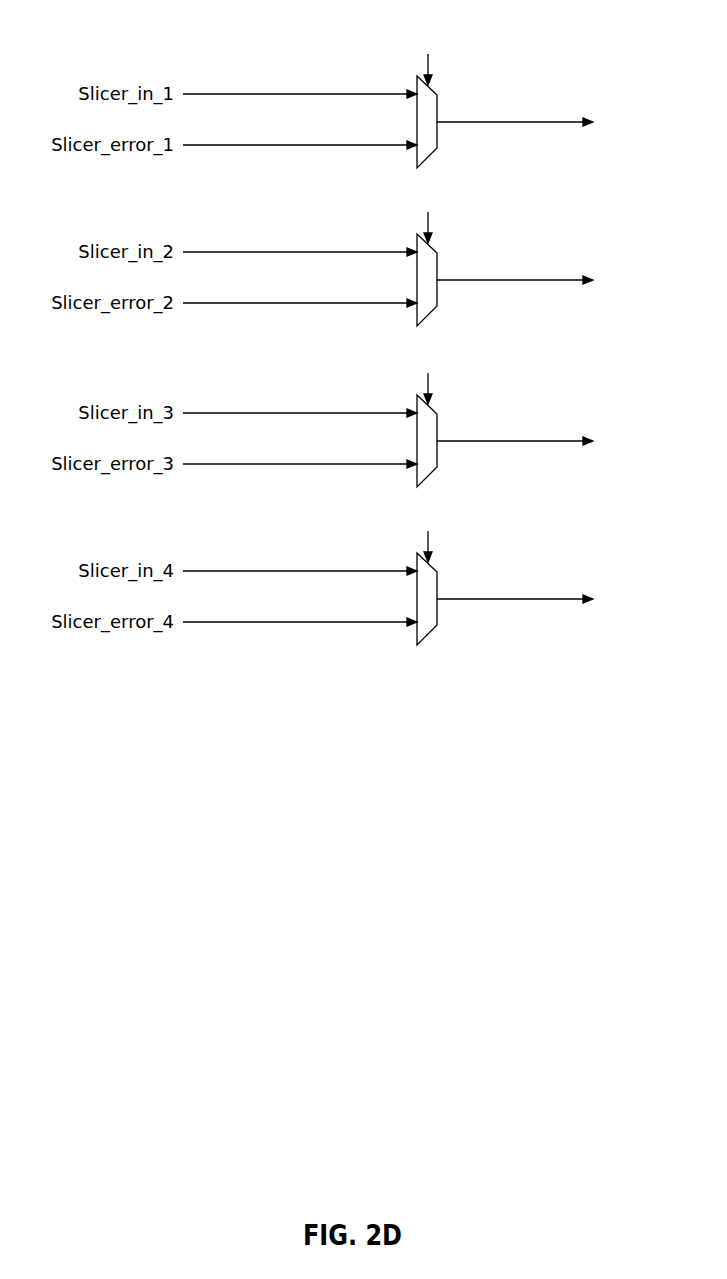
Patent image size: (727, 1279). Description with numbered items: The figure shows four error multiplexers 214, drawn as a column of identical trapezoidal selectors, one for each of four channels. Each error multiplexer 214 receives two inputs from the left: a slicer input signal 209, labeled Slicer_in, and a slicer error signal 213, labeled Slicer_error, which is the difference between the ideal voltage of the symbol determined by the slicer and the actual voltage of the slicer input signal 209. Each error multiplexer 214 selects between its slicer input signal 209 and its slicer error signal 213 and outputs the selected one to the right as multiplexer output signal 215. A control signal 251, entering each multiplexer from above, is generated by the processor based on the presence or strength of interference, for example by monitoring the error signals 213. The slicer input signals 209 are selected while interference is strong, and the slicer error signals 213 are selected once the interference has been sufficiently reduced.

The slicer input signal 209 is at (300, 319).
The slicer error signal 213 is at (300, 370).
The error multiplexer 214 is at (454, 360).
The multiplexer output signal 215 is at (515, 347).
The control signal 251 is at (428, 295).